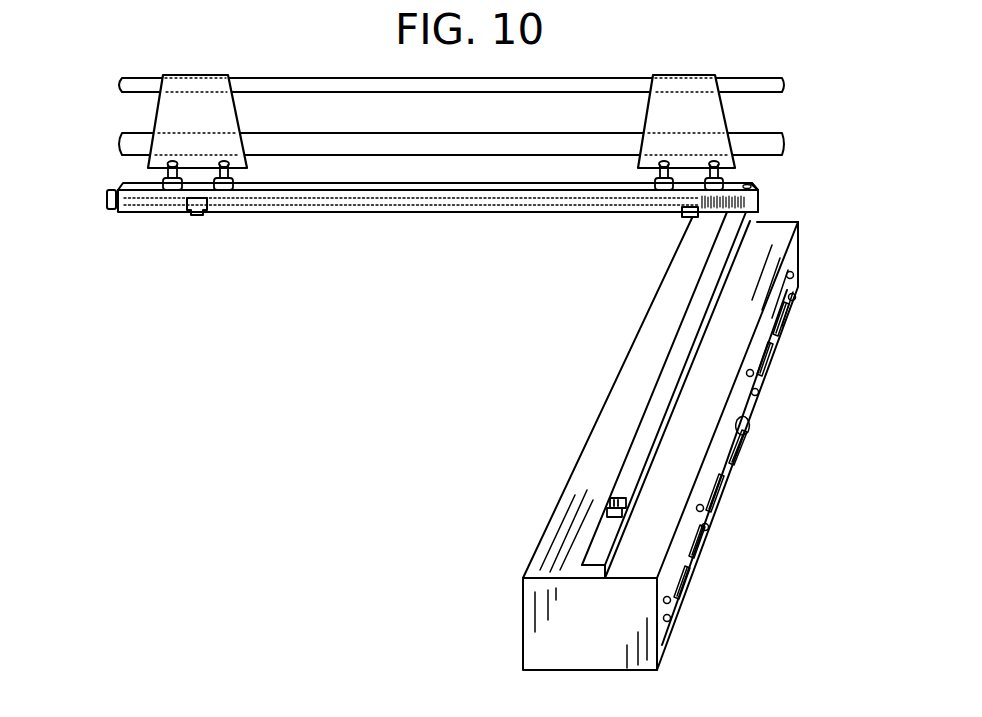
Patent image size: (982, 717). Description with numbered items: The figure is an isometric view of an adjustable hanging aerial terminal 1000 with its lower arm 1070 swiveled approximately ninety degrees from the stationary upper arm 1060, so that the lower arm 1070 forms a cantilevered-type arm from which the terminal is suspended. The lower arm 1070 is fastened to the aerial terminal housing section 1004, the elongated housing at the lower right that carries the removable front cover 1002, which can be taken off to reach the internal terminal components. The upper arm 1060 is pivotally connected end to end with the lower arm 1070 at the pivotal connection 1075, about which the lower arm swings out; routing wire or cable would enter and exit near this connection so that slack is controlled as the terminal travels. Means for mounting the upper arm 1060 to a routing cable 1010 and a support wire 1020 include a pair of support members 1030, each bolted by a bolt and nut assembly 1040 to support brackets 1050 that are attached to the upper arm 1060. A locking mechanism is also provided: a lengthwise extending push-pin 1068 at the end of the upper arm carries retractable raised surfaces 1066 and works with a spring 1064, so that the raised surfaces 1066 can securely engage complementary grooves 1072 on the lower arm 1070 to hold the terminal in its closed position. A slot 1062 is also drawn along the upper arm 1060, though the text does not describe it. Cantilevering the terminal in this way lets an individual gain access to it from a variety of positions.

The adjustable hanging aerial terminal 1000 is at (458, 585).
The front cover 1002 is at (775, 342).
The aerial terminal housing section 1004 is at (636, 382).
The routing cable 1010 is at (783, 138).
The support wire 1020 is at (783, 85).
The support members 1030 is at (163, 102).
The bolt and nut assembly 1040 is at (167, 163).
The support brackets 1050 is at (233, 176).
The upper arm 1060 is at (373, 186).
The rail slot 1062 is at (262, 213).
The spring 1064 is at (690, 217).
The retractable raised surfaces 1066 is at (193, 216).
The push-pin 1068 is at (110, 197).
The lower arm 1070 is at (693, 320).
The grooves 1072 is at (618, 502).
The pivotal connection 1075 is at (758, 208).